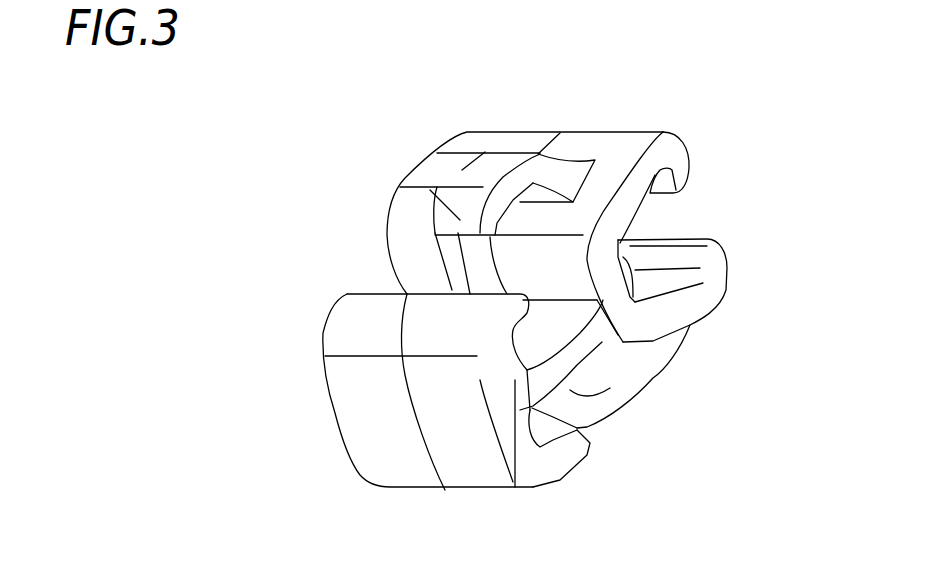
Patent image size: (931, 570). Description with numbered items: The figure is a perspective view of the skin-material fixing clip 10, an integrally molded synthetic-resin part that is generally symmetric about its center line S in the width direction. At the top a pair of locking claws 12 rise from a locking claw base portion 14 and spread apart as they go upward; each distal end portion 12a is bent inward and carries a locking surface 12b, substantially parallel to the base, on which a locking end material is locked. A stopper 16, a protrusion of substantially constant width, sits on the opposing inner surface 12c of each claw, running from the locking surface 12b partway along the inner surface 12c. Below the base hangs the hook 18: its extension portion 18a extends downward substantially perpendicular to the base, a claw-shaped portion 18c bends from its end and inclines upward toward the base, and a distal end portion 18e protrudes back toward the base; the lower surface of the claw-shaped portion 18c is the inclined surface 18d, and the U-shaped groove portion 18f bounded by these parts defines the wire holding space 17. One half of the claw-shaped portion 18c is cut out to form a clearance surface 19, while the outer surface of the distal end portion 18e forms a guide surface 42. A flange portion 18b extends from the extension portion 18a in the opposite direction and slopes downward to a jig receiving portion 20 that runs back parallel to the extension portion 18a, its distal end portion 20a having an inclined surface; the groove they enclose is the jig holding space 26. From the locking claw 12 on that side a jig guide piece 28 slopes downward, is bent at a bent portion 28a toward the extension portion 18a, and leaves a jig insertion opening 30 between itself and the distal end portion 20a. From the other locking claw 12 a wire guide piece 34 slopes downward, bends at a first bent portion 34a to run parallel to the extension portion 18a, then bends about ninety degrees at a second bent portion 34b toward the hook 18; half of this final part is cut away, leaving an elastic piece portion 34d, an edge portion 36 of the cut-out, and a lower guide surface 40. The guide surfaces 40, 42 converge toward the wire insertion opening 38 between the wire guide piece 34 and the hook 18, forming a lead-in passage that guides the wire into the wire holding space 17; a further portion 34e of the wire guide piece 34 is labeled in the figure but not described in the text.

The skin-material fixing clip 10 is at (710, 118).
The locking claw 12 is at (522, 143).
The distal end portion 12a is at (683, 160).
The locking surface 12b is at (677, 257).
The inner surface 12c is at (697, 287).
The locking claw base portion 14 is at (547, 273).
The stopper 16 is at (630, 250).
The wire holding space 17 is at (556, 323).
The hook 18 is at (480, 457).
The extension portion 18a is at (570, 357).
The flange portion 18b is at (530, 477).
The claw-shaped portion 18c is at (370, 330).
The inclined surface 18d is at (383, 420).
The distal end portion 18e is at (487, 297).
The U-shaped groove portion 18f is at (515, 487).
The clearance surface 19 is at (347, 300).
The jig receiving portion 20 is at (588, 440).
The distal end portion 20a is at (592, 443).
The jig holding space 26 is at (572, 446).
The jig guide piece 28 is at (663, 353).
The bent portion 28a is at (580, 428).
The jig insertion opening 30 is at (587, 431).
The wire guide piece 34 is at (412, 160).
The first bent portion 34a is at (437, 153).
The second bent portion 34b is at (388, 205).
The elastic piece portion 34d is at (413, 237).
The pocket 34e is at (450, 172).
The edge portion 36 is at (400, 185).
The wire insertion opening 38 is at (420, 284).
The guide surface 40 is at (415, 260).
The guide surface 42 is at (460, 294).
The center line S is at (553, 131).